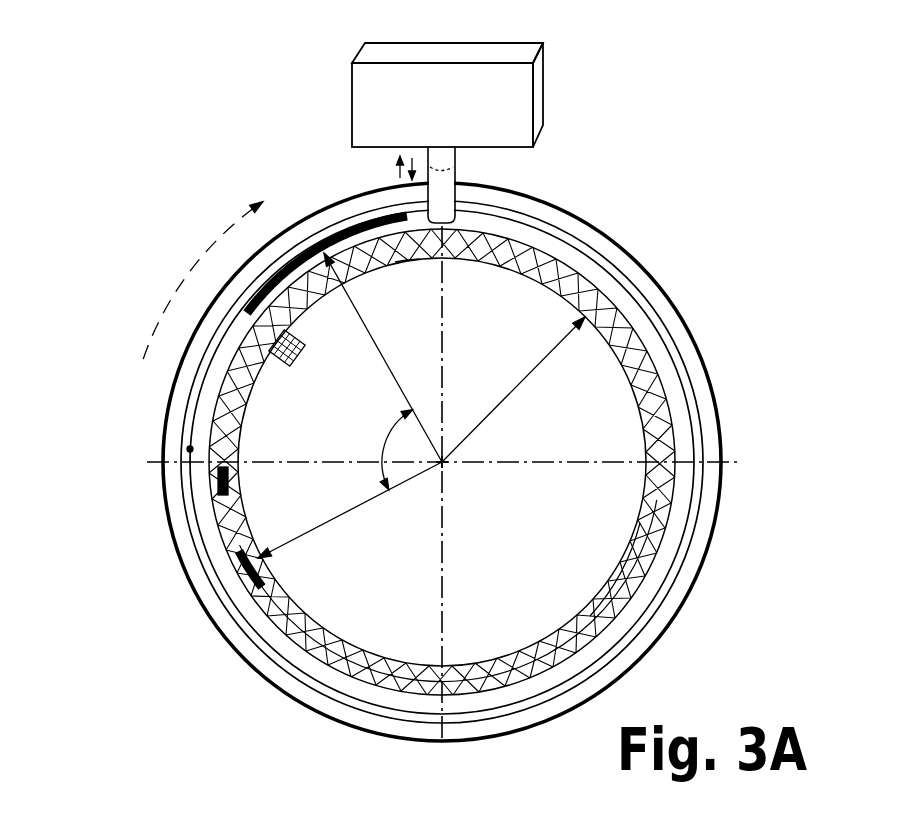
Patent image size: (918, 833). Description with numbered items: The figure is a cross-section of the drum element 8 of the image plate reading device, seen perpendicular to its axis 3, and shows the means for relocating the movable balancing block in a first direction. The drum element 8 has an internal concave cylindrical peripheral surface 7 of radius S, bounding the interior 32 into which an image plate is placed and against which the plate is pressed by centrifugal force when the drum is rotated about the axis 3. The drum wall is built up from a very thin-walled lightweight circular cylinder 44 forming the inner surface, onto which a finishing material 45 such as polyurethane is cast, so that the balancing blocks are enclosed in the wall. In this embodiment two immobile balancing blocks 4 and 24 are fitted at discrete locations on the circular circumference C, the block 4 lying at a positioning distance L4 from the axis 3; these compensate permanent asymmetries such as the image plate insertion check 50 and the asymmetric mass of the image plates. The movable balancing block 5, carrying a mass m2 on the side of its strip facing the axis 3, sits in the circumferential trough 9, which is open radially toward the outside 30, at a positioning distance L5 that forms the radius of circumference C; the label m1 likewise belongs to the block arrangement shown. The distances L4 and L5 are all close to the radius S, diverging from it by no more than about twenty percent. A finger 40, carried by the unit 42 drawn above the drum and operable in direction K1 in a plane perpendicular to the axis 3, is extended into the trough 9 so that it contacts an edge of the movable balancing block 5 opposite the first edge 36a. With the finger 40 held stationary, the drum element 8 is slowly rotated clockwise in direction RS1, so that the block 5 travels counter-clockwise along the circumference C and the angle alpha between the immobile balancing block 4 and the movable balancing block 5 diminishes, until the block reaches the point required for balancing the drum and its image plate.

The axis 3 is at (444, 458).
The immobile balancing block 4 is at (265, 585).
The movable balancing block 5 is at (405, 258).
The cylindrical peripheral surface 7 is at (647, 428).
The drum element 8 is at (615, 565).
The trough 9 is at (668, 363).
The immobile balancing block 24 is at (230, 485).
The outside 30 is at (105, 535).
The interior 32 is at (516, 518).
The first edge 36a is at (227, 327).
The finger 40 is at (452, 175).
The evaluation unit 42 is at (468, 113).
The thin-walled circular cylinder 44 is at (398, 667).
The finishing material 45 is at (667, 428).
The image plate insertion check 50 is at (297, 358).
The circular circumference C is at (190, 449).
The radius S is at (513, 389).
The direction K1 is at (384, 167).
The positioning distance L4 is at (350, 510).
The positioning distance L5 is at (383, 357).
The first mass m1 is at (243, 573).
The mass m2 is at (318, 238).
The direction RS1 is at (187, 281).
The angle alpha is at (383, 445).